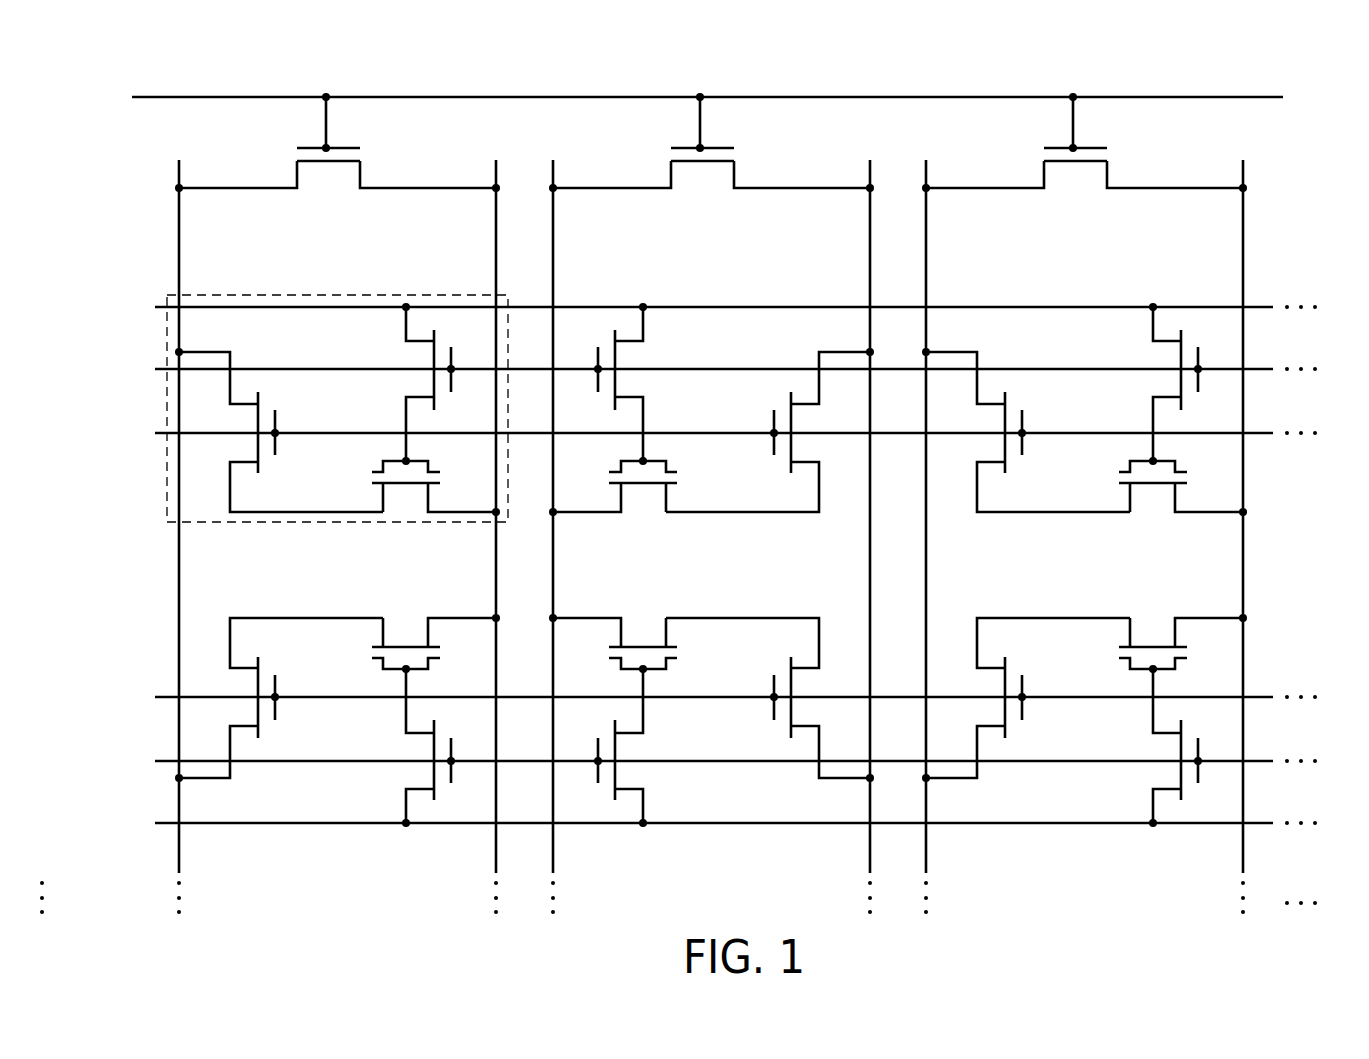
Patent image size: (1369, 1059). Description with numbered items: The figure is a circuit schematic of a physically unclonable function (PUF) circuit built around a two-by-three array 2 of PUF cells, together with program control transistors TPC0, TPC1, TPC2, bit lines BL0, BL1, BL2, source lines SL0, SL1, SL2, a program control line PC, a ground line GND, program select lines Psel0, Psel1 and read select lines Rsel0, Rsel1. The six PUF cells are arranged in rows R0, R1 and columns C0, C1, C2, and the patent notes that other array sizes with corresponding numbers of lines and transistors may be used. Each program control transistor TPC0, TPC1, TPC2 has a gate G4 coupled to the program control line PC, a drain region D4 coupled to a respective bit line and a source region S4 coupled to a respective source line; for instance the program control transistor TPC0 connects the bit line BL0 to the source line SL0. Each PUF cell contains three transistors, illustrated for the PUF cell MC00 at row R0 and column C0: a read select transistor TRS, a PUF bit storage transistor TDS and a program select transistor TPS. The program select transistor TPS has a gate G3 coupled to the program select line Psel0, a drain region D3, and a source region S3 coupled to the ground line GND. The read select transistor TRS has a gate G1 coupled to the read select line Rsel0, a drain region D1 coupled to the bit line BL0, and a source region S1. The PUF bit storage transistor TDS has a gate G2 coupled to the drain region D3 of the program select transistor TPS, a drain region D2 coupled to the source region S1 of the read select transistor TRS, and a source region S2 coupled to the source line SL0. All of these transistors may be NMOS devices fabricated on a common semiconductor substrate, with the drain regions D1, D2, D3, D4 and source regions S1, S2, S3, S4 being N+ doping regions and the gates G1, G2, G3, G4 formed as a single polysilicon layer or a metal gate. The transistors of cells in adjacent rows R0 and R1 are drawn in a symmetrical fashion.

The memory array 2 is at (1368, 122).
The program control line PC is at (686, 98).
The bit line BL0 is at (173, 496).
The source line SL0 is at (492, 496).
The source line SL1 is at (550, 496).
The bit line BL1 is at (862, 496).
The bit line BL2 is at (924, 496).
The source line SL2 is at (1240, 496).
The column C0 is at (332, 502).
The column C1 is at (706, 502).
The column C2 is at (1082, 502).
The row R0 is at (649, 399).
The row R1 is at (649, 729).
The ground line GND is at (680, 564).
The program select line Psel0 is at (678, 366).
The read select line Rsel0 is at (676, 431).
The program select line Psel1 is at (678, 758).
The read select line Rsel1 is at (676, 695).
The program control transistor TPC0 is at (337, 122).
The program control transistor TPC1 is at (710, 141).
The program control transistor TPC2 is at (1084, 140).
The gate G4 is at (320, 145).
The drain region D4 is at (246, 182).
The source region S4 is at (418, 182).
The PUF cell MC00 is at (168, 295).
The read select transistor TRS is at (259, 392).
The drain region D1 is at (215, 346).
The gate G1 is at (283, 427).
The source region S1 is at (222, 481).
The program select transistor TPS is at (441, 341).
The source region S3 is at (397, 329).
The gate G3 is at (459, 358).
The drain region D3 is at (397, 411).
The PUF bit storage transistor TDS is at (360, 502).
The gate G2 is at (397, 455).
The source region S2 is at (451, 500).
The drain region D2 is at (376, 495).